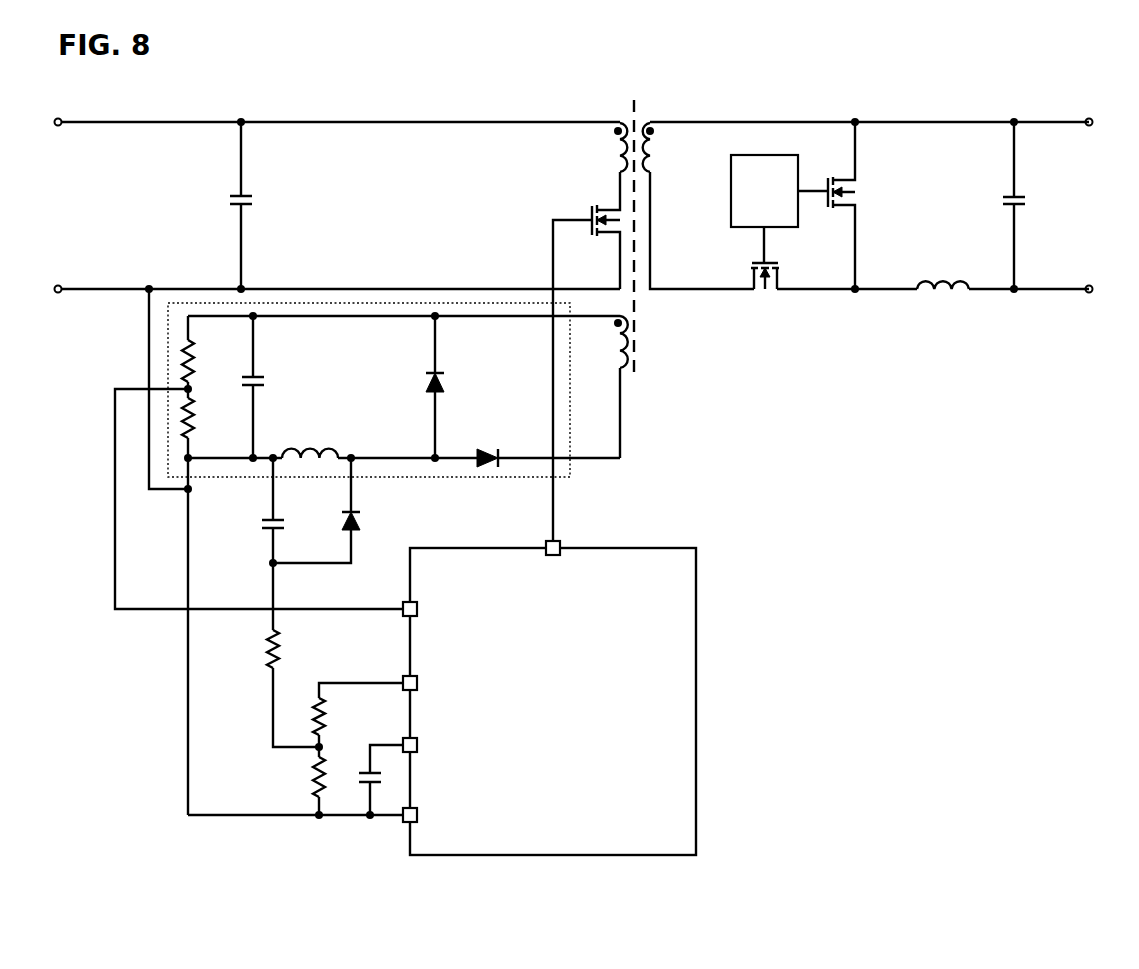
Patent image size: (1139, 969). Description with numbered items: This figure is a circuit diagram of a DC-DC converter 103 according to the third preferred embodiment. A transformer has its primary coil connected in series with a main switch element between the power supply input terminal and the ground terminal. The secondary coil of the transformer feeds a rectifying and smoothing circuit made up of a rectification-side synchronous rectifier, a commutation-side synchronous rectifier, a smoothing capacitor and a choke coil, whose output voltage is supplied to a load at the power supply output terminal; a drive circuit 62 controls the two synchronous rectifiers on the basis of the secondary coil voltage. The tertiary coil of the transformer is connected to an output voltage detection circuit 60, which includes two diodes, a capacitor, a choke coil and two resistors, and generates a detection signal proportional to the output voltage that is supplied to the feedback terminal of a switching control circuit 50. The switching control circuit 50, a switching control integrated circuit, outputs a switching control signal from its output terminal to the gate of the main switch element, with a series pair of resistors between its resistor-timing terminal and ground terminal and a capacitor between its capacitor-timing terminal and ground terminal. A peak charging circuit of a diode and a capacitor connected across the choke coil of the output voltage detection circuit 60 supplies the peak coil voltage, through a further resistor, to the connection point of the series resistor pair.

The DC-DC converter 103 is at (1014, 29).
The drive circuit 62 is at (764, 155).
The output voltage detection circuit 60 is at (570, 477).
The switching control circuit 50 is at (697, 687).